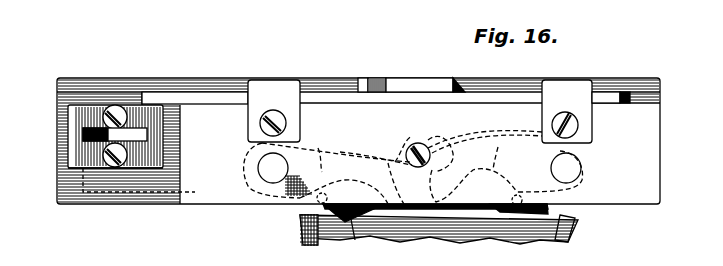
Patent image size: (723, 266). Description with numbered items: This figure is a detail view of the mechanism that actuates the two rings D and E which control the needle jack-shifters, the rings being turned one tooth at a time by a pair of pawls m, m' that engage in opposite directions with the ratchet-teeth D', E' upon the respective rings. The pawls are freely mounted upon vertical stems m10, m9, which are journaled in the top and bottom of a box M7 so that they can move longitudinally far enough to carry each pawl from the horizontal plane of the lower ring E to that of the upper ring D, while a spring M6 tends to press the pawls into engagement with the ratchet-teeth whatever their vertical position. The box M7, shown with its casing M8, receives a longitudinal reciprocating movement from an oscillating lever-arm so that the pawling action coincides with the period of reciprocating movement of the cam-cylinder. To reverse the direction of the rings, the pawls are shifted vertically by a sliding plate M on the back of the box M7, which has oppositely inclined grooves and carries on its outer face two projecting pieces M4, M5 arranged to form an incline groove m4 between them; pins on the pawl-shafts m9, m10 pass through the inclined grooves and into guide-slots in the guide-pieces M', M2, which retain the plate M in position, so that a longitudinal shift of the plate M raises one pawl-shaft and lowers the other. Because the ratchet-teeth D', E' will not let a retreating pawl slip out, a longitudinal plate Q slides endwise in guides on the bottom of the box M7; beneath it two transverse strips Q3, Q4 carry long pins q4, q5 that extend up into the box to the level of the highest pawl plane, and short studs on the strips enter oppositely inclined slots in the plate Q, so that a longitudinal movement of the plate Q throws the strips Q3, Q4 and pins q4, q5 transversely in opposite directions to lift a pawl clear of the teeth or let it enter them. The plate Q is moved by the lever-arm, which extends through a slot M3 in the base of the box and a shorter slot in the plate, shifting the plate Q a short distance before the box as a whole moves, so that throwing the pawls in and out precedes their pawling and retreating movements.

The longitudinal plate Q is at (98, 104).
The casing M8 is at (57, 121).
The box M7 is at (643, 137).
The spring M6 is at (210, 90).
The slot M3 is at (147, 135).
The guide-piece M2 is at (271, 90).
The guide-piece M' is at (567, 96).
The projecting piece M5 is at (362, 88).
The incline groove m4 is at (380, 88).
The projecting piece M4 is at (421, 88).
The sliding plate M is at (611, 80).
The pawl m is at (337, 153).
The pawl m' is at (485, 148).
The vertical stem m10 is at (273, 168).
The vertical stem m9 is at (578, 168).
The transverse strip Q3 is at (380, 212).
The transverse strip Q4 is at (507, 205).
The long pin q4 is at (323, 206).
The long pin q5 is at (548, 210).
The ring D is at (440, 238).
The ratchet-teeth D' is at (359, 238).
The ring E is at (409, 240).
The ratchet-teeth E' is at (572, 238).